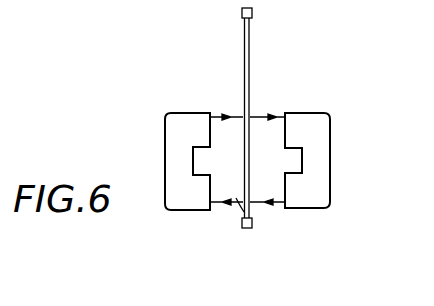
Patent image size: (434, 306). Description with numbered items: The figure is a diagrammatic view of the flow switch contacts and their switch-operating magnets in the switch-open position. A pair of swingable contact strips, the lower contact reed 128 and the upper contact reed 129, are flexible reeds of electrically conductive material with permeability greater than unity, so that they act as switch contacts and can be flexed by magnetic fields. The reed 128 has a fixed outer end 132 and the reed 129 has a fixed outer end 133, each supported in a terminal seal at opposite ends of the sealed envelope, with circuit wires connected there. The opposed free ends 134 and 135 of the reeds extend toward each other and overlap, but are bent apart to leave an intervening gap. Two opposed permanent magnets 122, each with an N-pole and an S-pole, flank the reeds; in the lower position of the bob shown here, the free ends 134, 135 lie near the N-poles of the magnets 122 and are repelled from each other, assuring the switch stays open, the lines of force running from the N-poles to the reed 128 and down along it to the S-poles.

The permanent magnets 122 is at (168, 208).
The contact reed 128 is at (244, 166).
The contact reed 129 is at (250, 54).
The outer end 132 is at (243, 226).
The outer end 133 is at (242, 14).
The free end 134 is at (243, 118).
The free end 135 is at (252, 113).